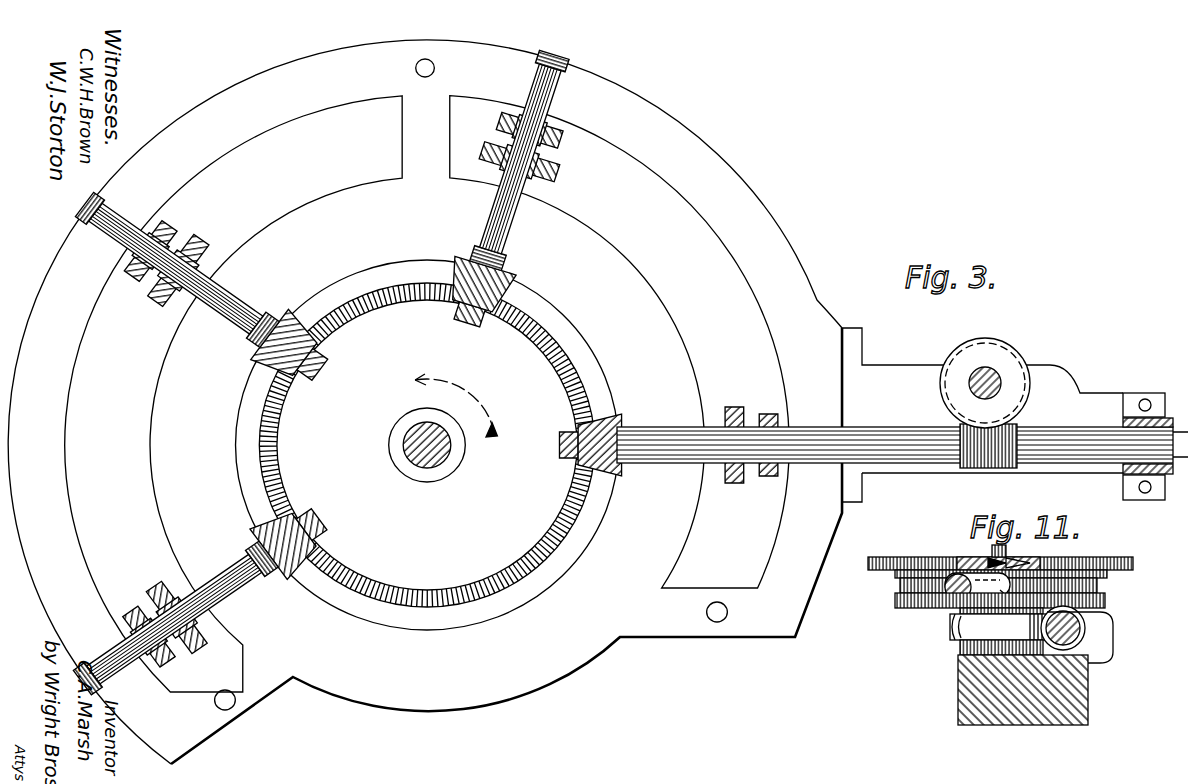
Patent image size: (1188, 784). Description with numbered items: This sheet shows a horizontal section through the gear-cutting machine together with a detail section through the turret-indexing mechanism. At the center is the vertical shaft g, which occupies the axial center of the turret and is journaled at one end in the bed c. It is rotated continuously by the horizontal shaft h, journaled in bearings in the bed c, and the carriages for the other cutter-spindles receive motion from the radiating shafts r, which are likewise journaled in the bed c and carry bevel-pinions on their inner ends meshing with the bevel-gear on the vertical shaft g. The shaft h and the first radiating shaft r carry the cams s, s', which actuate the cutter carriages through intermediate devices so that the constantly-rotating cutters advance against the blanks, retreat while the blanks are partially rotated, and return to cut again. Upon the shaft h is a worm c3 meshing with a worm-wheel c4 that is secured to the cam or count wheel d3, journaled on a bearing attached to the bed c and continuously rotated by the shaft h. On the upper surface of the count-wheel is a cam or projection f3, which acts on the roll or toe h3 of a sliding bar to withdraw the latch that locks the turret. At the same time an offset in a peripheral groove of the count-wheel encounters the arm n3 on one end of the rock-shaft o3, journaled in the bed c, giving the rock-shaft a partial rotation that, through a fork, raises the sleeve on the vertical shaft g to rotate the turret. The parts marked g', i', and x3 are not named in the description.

In FIG. 3, the radiating shaft r is at (246, 298).
In FIG. 3, the cam s is at (445, 401).
In FIG. 3, the cam s' is at (450, 391).
In FIG. 3, the horizontal shaft h is at (863, 437).
In FIG. 3, the vertical shaft g is at (429, 449).
In FIG. 3, the worm c3 is at (1022, 430).
In FIG. 11, the worm c3 is at (1080, 636).
In FIG. 3, the worm-wheel c4 is at (985, 383).
In FIG. 11, the worm-wheel c4 is at (957, 630).
In FIG. 11, the roll or toe h3 is at (988, 553).
In FIG. 11, the wedge g' is at (1007, 549).
In FIG. 11, the cam or projection f3 is at (1012, 563).
In FIG. 11, the cam or count wheel d3 is at (1011, 559).
In FIG. 11, the arm n3 is at (1012, 585).
In FIG. 11, the bar i' is at (1009, 593).
In FIG. 11, the lug x3 is at (1011, 599).
In FIG. 11, the rock-shaft o3 is at (955, 592).
In FIG. 11, the bed c is at (1075, 692).